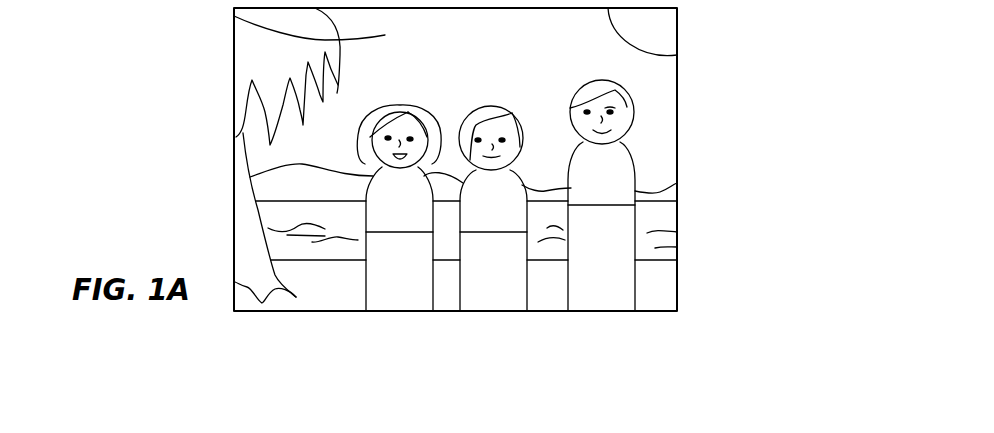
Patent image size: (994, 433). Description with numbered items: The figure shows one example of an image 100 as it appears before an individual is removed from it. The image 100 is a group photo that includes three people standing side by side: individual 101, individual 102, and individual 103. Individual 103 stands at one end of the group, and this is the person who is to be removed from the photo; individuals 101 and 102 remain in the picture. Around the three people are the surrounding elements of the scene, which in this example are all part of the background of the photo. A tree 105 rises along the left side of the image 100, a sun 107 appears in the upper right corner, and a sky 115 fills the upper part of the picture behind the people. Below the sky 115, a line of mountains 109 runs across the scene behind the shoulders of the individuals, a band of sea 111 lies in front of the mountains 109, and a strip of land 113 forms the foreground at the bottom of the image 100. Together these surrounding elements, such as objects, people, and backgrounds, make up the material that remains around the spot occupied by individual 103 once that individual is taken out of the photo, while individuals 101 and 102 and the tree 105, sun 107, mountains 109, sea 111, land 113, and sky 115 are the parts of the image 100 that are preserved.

The image 100 is at (678, 115).
The individual 101 is at (385, 293).
The individual 102 is at (517, 297).
The individual 103 is at (617, 297).
The tree 105 is at (243, 237).
The sun 107 is at (657, 35).
The mountains 109 is at (668, 193).
The sea 111 is at (668, 250).
The land 113 is at (668, 297).
The sky 115 is at (234, 16).